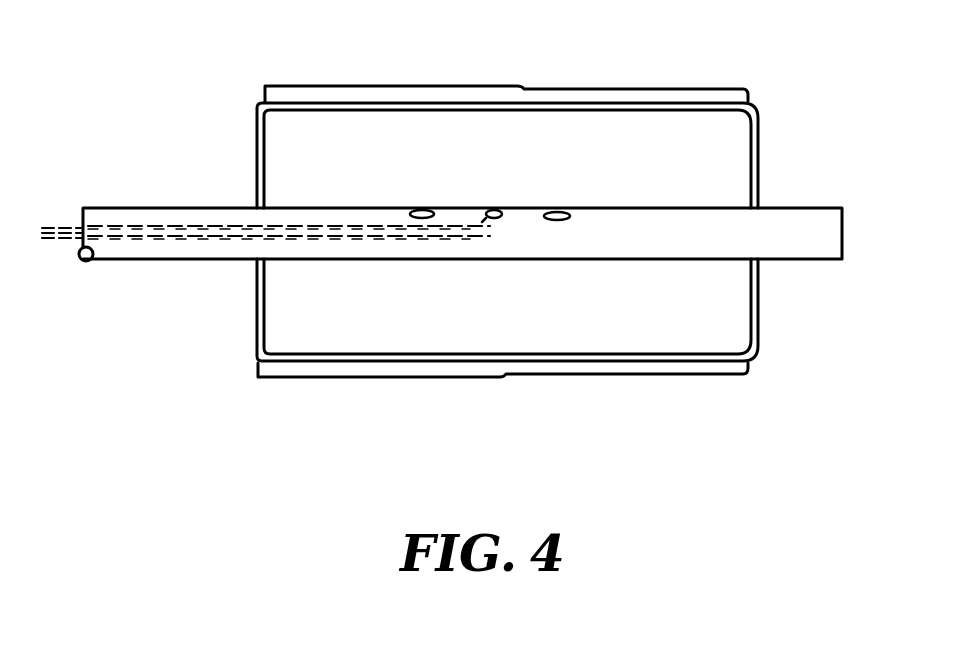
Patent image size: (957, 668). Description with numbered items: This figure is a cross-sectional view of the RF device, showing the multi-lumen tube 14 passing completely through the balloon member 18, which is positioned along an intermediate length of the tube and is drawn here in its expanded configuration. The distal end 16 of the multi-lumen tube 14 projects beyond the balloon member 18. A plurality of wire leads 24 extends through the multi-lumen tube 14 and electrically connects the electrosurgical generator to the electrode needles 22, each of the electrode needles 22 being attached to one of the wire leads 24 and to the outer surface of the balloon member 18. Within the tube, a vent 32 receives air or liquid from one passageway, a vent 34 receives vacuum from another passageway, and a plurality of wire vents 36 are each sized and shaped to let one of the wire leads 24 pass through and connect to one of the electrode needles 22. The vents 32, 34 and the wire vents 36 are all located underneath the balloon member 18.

The multi-lumen tube 14 is at (685, 240).
The distal end 16 is at (810, 224).
The balloon member 18 is at (712, 138).
The electrode needles 22 is at (527, 92).
The wire leads 24 is at (173, 236).
The vent 32 is at (420, 210).
The vent 34 is at (560, 213).
The wire vents 36 is at (464, 220).